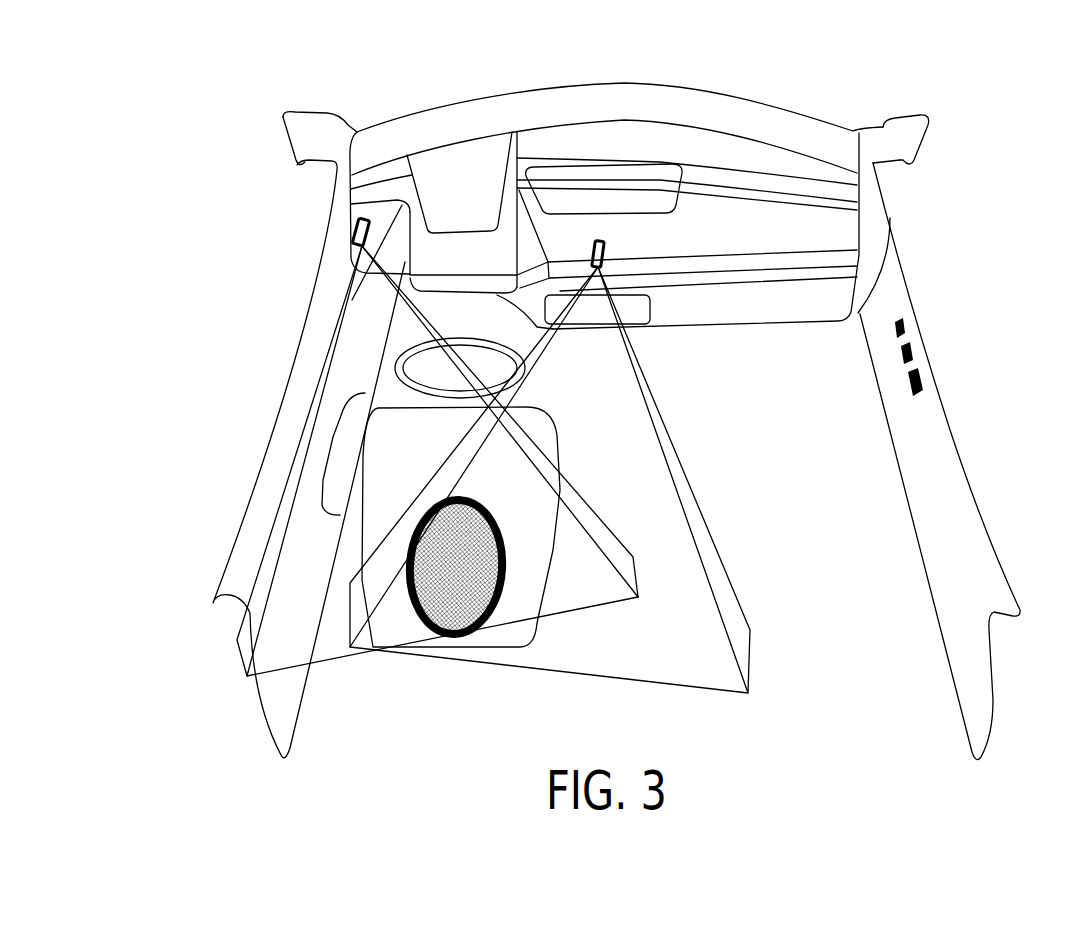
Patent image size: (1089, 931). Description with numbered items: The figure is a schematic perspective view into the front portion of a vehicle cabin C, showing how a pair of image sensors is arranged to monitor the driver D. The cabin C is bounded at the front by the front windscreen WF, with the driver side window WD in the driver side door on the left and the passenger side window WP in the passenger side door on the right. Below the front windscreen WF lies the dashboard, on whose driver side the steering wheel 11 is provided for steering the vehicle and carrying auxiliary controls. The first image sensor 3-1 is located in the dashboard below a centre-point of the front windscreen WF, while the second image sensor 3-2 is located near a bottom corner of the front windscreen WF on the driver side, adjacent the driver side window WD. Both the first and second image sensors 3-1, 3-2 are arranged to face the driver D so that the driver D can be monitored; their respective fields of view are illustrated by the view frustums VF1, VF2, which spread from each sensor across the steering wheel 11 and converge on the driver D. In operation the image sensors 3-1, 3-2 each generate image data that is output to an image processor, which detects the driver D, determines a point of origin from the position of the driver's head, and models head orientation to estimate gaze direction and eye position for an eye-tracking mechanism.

The first image sensor 3-1 is at (601, 242).
The second image sensor 3-2 is at (353, 226).
The steering wheel 11 is at (394, 364).
The vehicle cabin C is at (962, 168).
The driver D is at (467, 597).
The view frustum VF1 is at (648, 480).
The view frustum VF2 is at (313, 540).
The front windscreen WF is at (606, 97).
The driver side window WD is at (305, 459).
The passenger side window WP is at (941, 461).